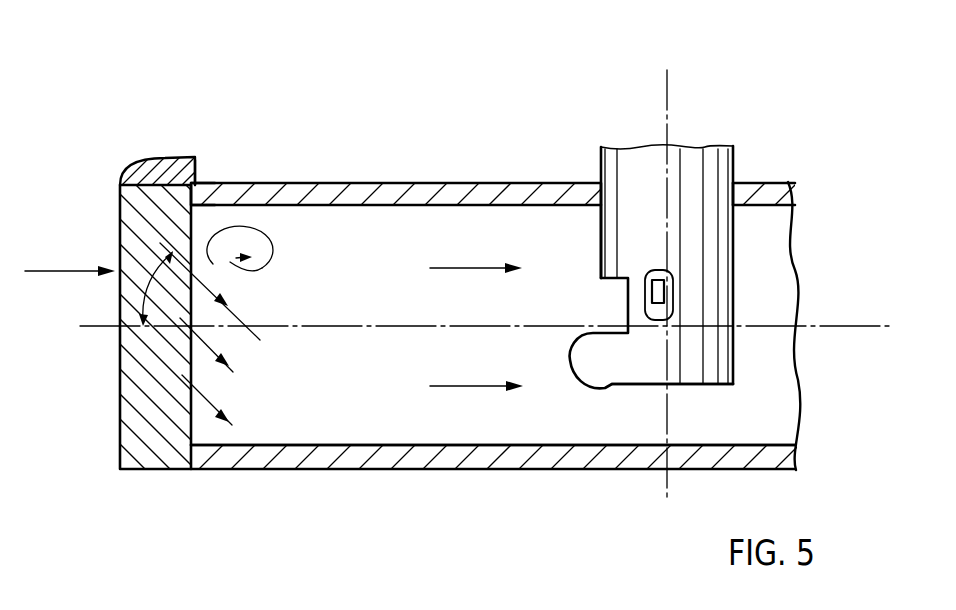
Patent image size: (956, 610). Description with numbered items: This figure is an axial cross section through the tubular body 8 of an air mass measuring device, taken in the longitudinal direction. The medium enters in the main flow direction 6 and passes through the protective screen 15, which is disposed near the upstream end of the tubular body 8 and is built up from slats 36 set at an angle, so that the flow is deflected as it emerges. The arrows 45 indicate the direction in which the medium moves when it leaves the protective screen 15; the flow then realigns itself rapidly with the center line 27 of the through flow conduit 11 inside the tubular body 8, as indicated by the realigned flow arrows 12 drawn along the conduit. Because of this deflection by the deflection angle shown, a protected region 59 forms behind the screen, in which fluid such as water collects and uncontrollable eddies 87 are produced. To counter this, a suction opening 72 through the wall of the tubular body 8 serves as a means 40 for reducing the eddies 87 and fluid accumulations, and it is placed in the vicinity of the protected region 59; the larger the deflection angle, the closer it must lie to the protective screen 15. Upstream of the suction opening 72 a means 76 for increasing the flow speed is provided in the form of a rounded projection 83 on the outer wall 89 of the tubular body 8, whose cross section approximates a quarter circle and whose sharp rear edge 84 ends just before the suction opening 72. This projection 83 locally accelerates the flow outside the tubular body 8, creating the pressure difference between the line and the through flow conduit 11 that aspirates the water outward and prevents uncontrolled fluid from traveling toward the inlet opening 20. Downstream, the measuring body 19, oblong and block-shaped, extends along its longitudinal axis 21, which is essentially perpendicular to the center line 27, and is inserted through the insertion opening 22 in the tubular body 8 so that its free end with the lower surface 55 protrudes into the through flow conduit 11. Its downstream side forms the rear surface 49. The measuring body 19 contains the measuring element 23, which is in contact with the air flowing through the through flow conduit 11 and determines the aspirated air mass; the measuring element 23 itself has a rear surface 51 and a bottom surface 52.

The main flow direction 6 is at (54, 272).
The tubular body 8 is at (460, 453).
The through flow conduit 11 is at (550, 420).
The main flow direction 12 is at (447, 268).
The protective screen 15 is at (143, 367).
The measuring body 19 is at (720, 223).
The inlet opening 20 is at (624, 318).
The longitudinal axis 21 is at (668, 103).
The insertion opening 22 is at (607, 193).
The measuring element 23 is at (656, 266).
The center line 27 is at (857, 327).
The slats 36 is at (133, 428).
The means for reducing eddies 40 is at (220, 190).
The arrows 45 is at (220, 291).
The rear surface 49 is at (740, 311).
The rear surface 51 is at (673, 285).
The bottom surface 52 is at (663, 300).
The lower surface 55 is at (692, 388).
The protected region 59 is at (257, 217).
The suction opening 72 is at (483, 171).
The means for increasing a flow speed 76 is at (144, 145).
The projections 83 is at (152, 170).
The sharp rear edge 84 is at (203, 177).
The eddies 87 is at (277, 253).
The outer wall 89 is at (210, 182).